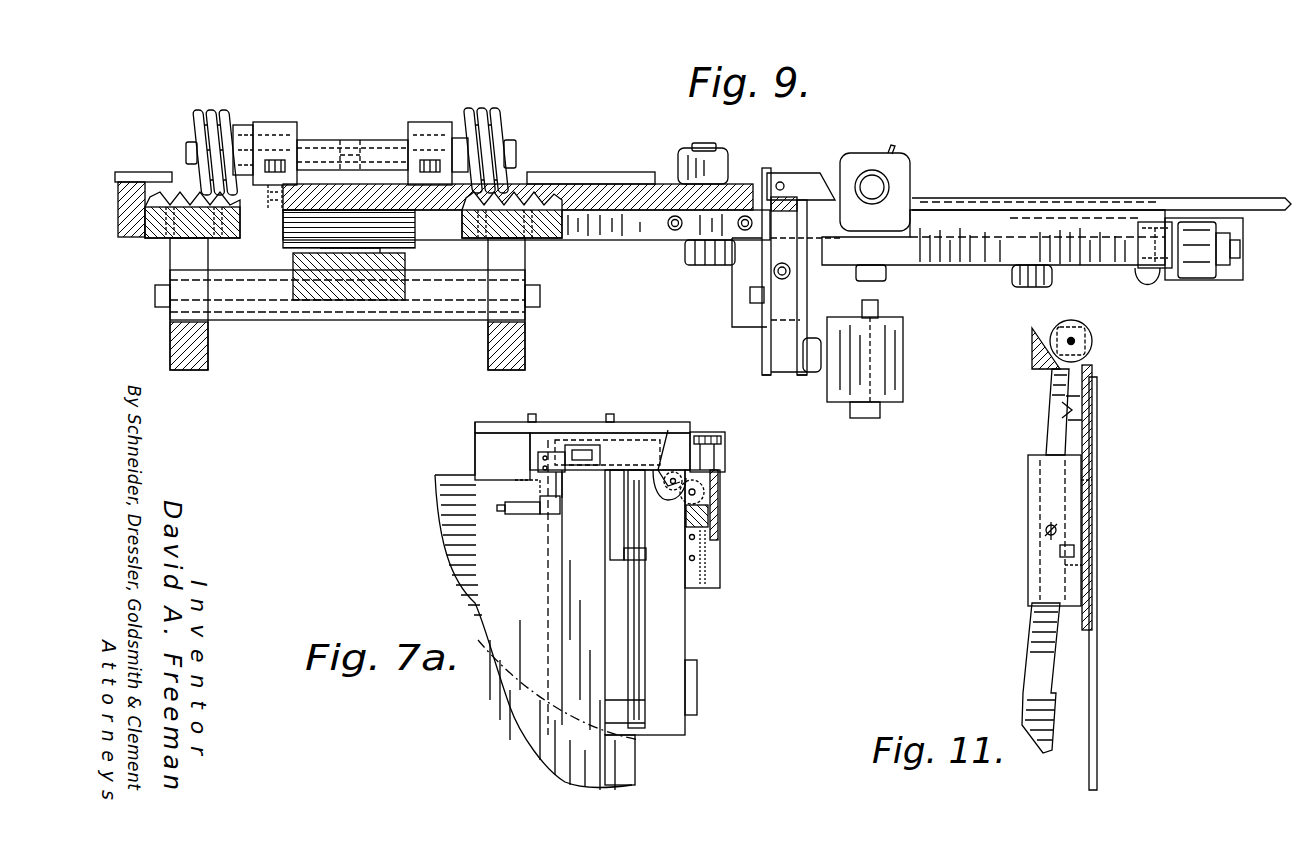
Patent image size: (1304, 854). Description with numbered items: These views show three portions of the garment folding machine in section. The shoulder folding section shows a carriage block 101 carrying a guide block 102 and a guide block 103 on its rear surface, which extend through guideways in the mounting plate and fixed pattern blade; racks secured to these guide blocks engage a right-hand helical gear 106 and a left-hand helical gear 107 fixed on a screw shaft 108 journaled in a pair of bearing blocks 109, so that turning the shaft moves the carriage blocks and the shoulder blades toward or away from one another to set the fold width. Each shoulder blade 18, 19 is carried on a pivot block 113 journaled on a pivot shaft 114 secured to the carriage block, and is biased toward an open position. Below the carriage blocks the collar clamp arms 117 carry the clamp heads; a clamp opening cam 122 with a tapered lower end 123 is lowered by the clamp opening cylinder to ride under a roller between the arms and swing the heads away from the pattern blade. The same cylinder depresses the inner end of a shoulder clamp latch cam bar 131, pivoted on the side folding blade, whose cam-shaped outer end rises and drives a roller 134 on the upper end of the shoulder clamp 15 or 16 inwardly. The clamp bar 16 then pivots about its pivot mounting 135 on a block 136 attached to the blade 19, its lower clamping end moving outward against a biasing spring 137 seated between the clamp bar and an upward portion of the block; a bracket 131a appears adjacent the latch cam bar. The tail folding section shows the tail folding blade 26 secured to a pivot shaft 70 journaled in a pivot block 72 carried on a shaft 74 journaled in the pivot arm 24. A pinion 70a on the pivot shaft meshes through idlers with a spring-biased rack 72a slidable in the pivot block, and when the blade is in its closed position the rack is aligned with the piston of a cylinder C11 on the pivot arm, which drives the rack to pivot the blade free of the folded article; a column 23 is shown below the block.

In FIG. 9, the carriage block 101 is at (655, 240).
In FIG. 9, the guide block 102 is at (535, 195).
In FIG. 9, the guide block 103 is at (240, 205).
In FIG. 9, the helical gear 106 is at (505, 112).
In FIG. 9, the helical gear 107 is at (226, 110).
In FIG. 9, the screw shaft 108 is at (378, 140).
In FIG. 9, the bearing block 109 is at (295, 112).
In FIG. 9, the pivot block 113 is at (900, 192).
In FIG. 9, the pivot shaft 114 is at (895, 188).
In FIG. 9, the clamp arm 117 is at (208, 345).
In FIG. 9, the clamp opening cam 122 is at (405, 258).
In FIG. 9, the tapered lower end 123 is at (415, 312).
In FIG. 9, the shoulder clamp latch cam bar 131 is at (1120, 252).
In FIG. 11, the shoulder clamp latch cam bar 131 is at (1032, 352).
In FIG. 9, the bracket 131a is at (835, 262).
In FIG. 9, the roller 134 is at (1152, 280).
In FIG. 11, the roller 134 is at (1092, 343).
In FIG. 11, the pivot mounting 135 is at (1045, 530).
In FIG. 11, the block 136 is at (1028, 470).
In FIG. 11, the biasing spring 137 is at (1069, 434).
In FIG. 9, the shoulder clamp 15 is at (1205, 270).
In FIG. 11, the shoulder clamp 16 is at (1042, 643).
In FIG. 9, the shoulder blade 18 is at (1248, 192).
In FIG. 11, the shoulder blade 19 is at (1096, 670).
In FIG. 7A, the column 23 is at (625, 753).
In FIG. 7A, the pivot arm 24 is at (565, 422).
In FIG. 7A, the tail folding blade 26 is at (447, 548).
In FIG. 7A, the pivot shaft 70 is at (668, 495).
In FIG. 7A, the pinion 70a is at (672, 420).
In FIG. 7A, the pivot block 72 is at (605, 590).
In FIG. 7A, the rack 72a is at (720, 486).
In FIG. 7A, the shaft 74 is at (645, 638).
In FIG. 7A, the cylinder C11 is at (725, 452).